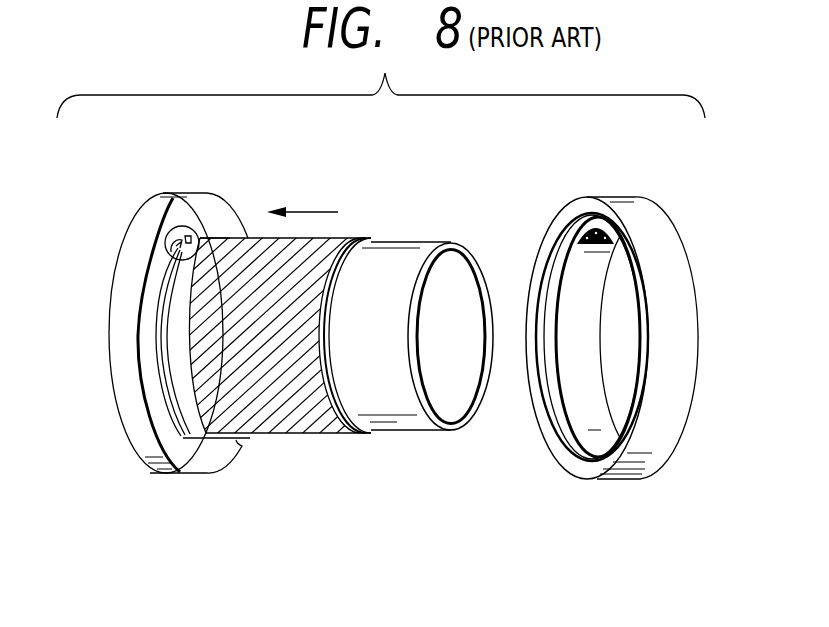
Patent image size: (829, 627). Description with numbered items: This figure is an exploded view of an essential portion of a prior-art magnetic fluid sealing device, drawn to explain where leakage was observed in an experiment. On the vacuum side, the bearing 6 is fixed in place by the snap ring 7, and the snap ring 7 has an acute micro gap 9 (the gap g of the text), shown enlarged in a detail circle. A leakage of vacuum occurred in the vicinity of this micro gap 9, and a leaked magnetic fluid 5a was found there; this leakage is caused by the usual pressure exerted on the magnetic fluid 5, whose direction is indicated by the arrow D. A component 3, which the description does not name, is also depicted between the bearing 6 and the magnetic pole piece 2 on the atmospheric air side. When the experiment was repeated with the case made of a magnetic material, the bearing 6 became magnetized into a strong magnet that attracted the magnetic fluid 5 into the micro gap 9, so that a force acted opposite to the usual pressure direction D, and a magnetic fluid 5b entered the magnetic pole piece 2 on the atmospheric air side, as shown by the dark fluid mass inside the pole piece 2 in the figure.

The magnetic pole piece 2 is at (640, 197).
The pipe 3 is at (390, 243).
The magnetic fluid 5 is at (365, 438).
The leaked magnetic fluid 5a is at (238, 233).
The magnetic fluid 5b is at (573, 240).
The bearing 6 is at (108, 313).
The snap ring 7 is at (192, 437).
The micro gap 9 is at (182, 227).
The pressure direction D is at (288, 204).